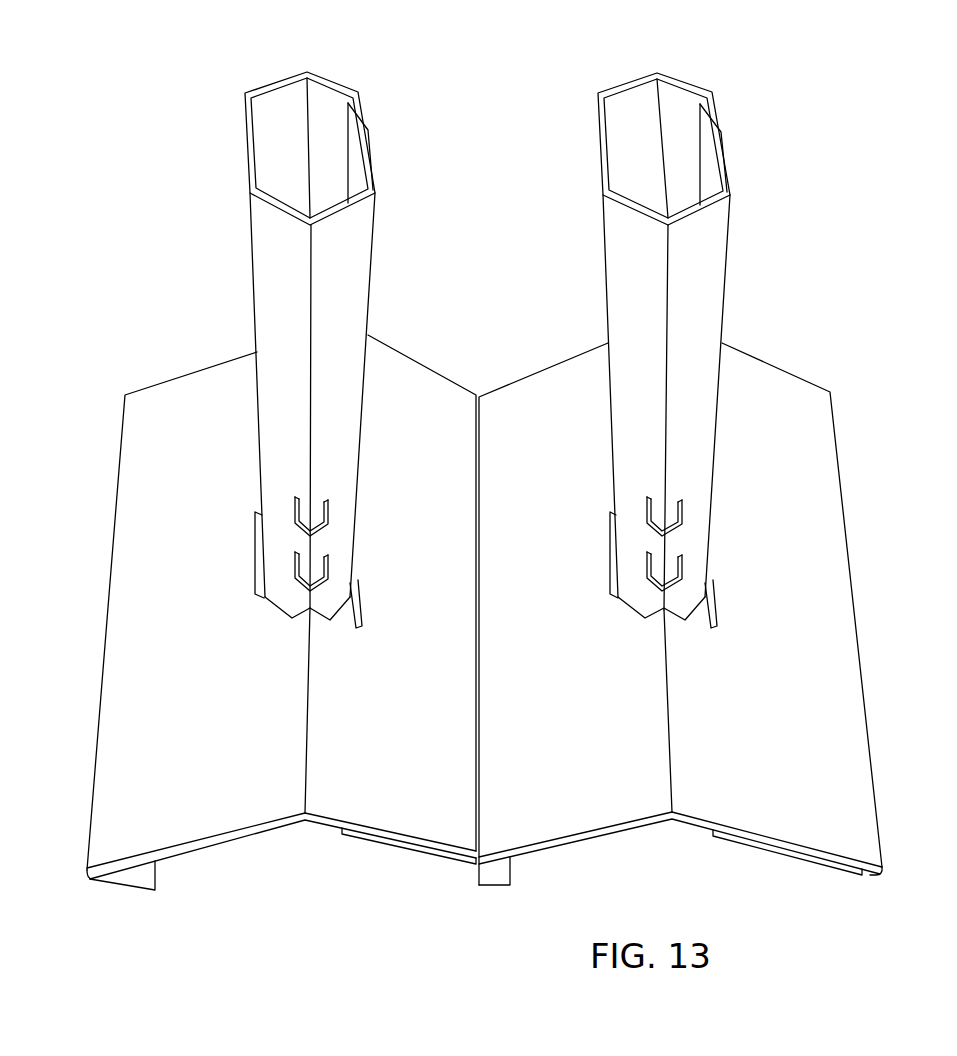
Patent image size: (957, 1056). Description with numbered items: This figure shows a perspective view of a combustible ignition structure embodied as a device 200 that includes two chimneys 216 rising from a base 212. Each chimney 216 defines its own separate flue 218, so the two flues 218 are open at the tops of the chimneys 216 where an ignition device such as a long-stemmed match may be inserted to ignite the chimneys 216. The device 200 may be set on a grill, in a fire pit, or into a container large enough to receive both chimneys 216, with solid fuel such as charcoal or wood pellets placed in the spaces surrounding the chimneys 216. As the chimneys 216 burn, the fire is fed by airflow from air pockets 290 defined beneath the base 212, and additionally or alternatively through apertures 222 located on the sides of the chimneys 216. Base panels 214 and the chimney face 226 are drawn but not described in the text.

The device 200 is at (472, 470).
The base 212 is at (208, 847).
The base panel 214 is at (398, 787).
The chimney 216 is at (348, 325).
The flue 218 is at (290, 107).
The aperture 222 is at (318, 513).
The post front face 226 is at (350, 457).
The air pocket 290 is at (302, 848).